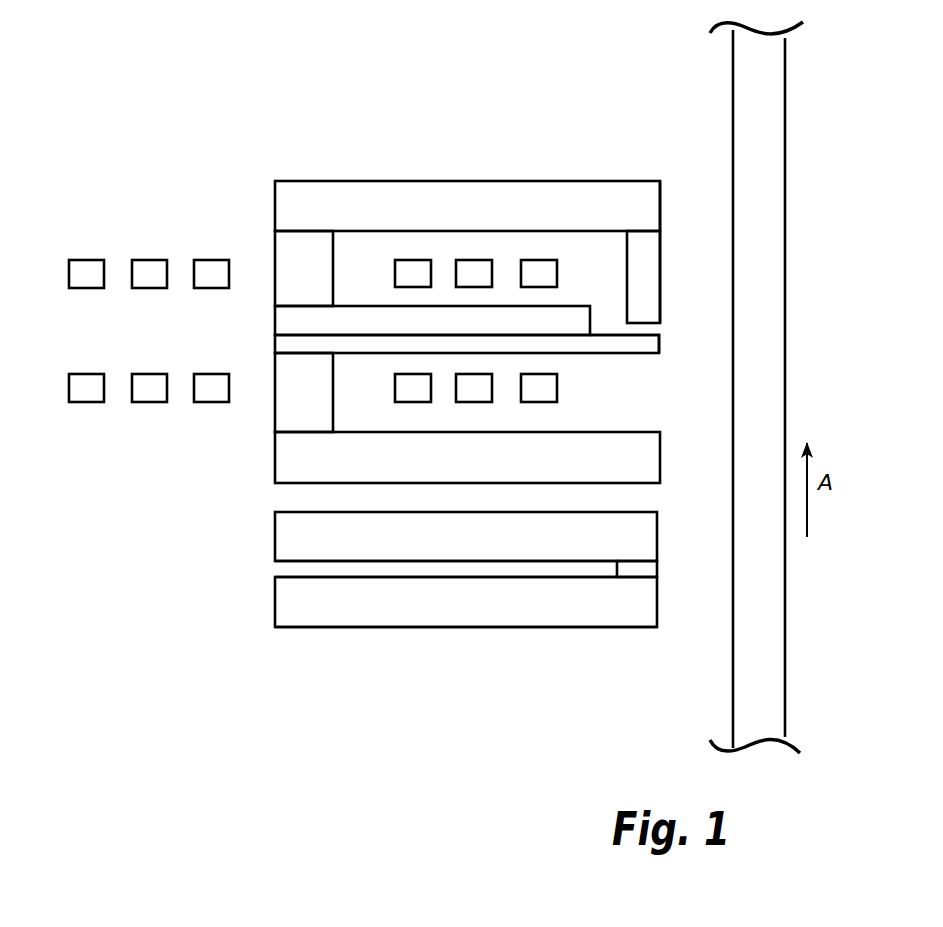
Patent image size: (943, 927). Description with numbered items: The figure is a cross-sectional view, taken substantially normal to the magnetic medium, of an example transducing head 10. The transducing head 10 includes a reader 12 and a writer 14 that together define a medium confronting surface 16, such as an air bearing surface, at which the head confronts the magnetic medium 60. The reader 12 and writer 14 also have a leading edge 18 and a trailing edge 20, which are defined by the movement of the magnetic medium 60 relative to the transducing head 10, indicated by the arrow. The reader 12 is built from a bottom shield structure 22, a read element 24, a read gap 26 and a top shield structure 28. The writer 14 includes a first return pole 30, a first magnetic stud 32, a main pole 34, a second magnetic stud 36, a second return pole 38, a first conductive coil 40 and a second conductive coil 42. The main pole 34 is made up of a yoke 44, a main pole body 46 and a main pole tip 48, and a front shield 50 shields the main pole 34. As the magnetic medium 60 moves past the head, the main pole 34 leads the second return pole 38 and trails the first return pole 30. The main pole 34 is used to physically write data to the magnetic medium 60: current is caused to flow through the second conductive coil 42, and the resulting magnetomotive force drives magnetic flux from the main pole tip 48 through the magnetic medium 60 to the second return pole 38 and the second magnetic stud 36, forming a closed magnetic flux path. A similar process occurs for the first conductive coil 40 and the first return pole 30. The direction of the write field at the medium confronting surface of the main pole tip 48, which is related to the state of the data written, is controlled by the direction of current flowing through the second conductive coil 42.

The transducing head 10 is at (193, 112).
The reader 12 is at (237, 553).
The writer 14 is at (265, 230).
The medium confronting surface 16 is at (664, 200).
The leading edge 18 is at (567, 655).
The trailing edge 20 is at (610, 162).
The bottom shield structure 22 is at (282, 604).
The read element 24 is at (648, 568).
The read gap 26 is at (272, 568).
The top shield structure 28 is at (283, 528).
The first return pole 30 is at (280, 458).
The first magnetic stud 32 is at (280, 408).
The main pole 34 is at (460, 337).
The second magnetic stud 36 is at (295, 277).
The second return pole 38 is at (284, 200).
The first conductive coil 40 is at (128, 404).
The second conductive coil 42 is at (128, 252).
The yoke 44 is at (395, 323).
The main pole body 46 is at (385, 346).
The main pole tip 48 is at (637, 345).
The front shield 50 is at (647, 293).
The magnetic medium 60 is at (814, 118).